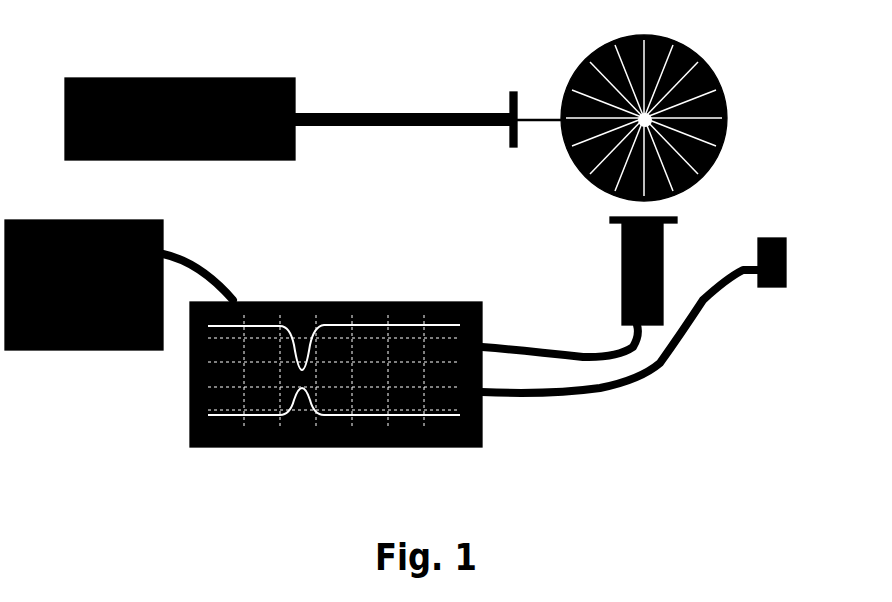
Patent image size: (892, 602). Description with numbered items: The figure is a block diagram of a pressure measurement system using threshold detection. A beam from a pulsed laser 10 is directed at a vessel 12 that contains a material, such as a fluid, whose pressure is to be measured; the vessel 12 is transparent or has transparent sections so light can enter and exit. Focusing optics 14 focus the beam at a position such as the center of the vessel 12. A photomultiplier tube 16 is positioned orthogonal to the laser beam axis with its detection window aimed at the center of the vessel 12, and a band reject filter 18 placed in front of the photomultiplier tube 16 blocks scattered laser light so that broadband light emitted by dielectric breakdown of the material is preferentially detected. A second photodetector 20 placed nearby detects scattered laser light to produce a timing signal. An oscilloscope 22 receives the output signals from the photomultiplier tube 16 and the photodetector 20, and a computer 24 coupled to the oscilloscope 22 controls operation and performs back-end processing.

The pulsed laser 10 is at (95, 82).
The vessel 12 is at (695, 55).
The focusing optics 14 is at (508, 151).
The photomultiplier tube 16 is at (633, 302).
The band reject filter 18 is at (600, 220).
The second photodetector 20 is at (780, 262).
The oscilloscope 22 is at (355, 437).
The computer 24 is at (112, 345).